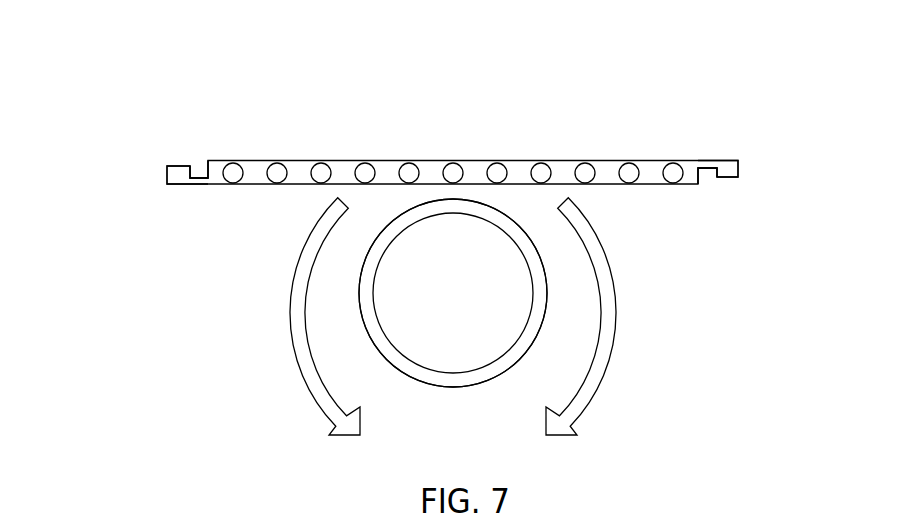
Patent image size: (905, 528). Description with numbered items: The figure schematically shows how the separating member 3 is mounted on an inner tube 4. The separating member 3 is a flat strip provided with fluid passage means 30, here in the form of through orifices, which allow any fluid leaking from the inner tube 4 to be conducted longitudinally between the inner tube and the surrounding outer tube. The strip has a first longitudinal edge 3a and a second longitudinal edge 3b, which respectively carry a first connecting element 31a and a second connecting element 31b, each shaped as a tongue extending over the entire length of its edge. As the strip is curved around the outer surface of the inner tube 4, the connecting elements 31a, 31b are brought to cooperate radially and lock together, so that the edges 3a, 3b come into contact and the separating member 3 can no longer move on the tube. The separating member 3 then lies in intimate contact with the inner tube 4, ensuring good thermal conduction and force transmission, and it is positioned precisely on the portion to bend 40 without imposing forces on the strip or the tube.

The separating member 3 is at (349, 126).
The first longitudinal edge 3a is at (167, 176).
The second longitudinal edge 3b is at (740, 167).
The first connecting element 31a is at (195, 147).
The second connecting element 31b is at (716, 190).
The fluid passage means 30 is at (490, 161).
The inner tube 4 is at (490, 375).
The portion to bend 40 is at (407, 384).